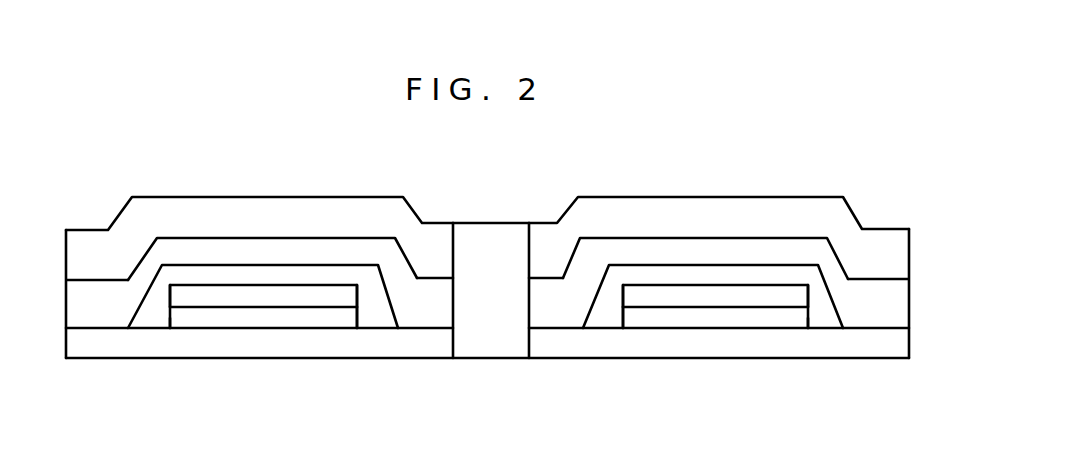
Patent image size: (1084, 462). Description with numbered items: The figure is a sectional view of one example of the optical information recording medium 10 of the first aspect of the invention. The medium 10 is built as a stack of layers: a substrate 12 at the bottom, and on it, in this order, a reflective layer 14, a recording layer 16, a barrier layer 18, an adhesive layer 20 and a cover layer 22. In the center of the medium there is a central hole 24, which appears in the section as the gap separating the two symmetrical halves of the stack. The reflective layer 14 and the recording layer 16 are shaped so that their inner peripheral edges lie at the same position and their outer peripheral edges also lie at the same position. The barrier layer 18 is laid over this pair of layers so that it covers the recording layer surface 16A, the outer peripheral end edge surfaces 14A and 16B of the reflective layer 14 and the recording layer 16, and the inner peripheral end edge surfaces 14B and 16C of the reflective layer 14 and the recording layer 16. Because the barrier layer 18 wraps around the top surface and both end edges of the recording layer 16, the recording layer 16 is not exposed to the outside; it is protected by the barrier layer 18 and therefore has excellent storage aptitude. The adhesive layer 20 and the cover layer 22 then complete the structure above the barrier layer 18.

The optical information recording medium 10 is at (821, 112).
The substrate 12 is at (175, 343).
The reflective layer 14 is at (227, 318).
The outer peripheral end edge surface of the reflective layer 14A is at (167, 320).
The inner peripheral end edge surface of the reflective layer 14B is at (358, 313).
The recording layer 16 is at (280, 295).
The recording layer surface 16A is at (242, 287).
The outer peripheral end edge surface of the recording layer 16B is at (168, 327).
The inner peripheral end edge surface of the recording layer 16C is at (358, 295).
The barrier layer 18 is at (335, 275).
The adhesive layer 20 is at (97, 307).
The cover layer 22 is at (317, 215).
The central hole 24 is at (455, 248).